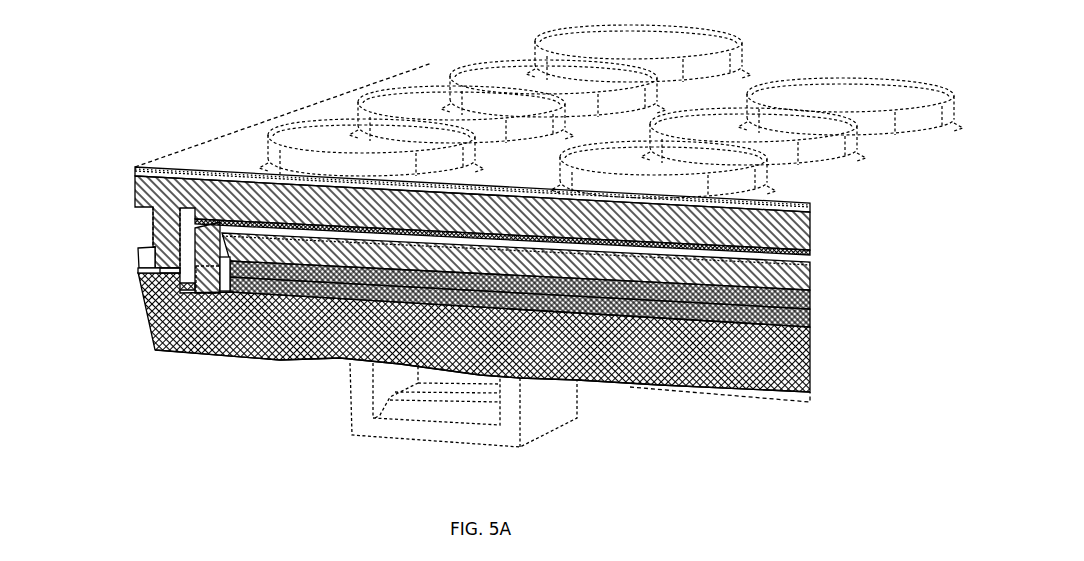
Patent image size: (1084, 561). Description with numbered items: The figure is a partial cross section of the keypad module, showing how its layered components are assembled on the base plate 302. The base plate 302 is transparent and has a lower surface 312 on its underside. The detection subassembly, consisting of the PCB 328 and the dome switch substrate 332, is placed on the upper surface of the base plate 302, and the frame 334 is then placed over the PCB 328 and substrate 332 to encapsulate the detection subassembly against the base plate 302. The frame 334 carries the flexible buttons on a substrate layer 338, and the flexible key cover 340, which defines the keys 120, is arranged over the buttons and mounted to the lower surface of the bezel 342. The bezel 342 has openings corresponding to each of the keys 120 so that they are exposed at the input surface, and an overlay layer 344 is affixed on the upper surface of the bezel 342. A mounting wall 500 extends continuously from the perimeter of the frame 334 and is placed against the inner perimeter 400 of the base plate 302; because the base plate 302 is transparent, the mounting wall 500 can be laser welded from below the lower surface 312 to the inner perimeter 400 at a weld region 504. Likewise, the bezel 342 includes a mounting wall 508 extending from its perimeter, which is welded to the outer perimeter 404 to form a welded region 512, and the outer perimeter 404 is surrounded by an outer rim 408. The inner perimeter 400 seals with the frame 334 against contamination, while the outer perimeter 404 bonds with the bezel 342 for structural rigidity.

The keys 120 is at (785, 147).
The base plate 302 is at (654, 367).
The lower surface 312 is at (308, 362).
The PCB 328 is at (808, 302).
The substrate 332 is at (803, 312).
The frame 334 is at (803, 287).
The substrate layer 338 is at (812, 271).
The key cover 340 is at (812, 252).
The bezel 342 is at (790, 238).
The overlay layer 344 is at (802, 213).
The inner perimeter 400 is at (223, 290).
The outer perimeter 404 is at (153, 268).
The outer rim 408 is at (140, 255).
The mounting wall 500 is at (210, 245).
The weld region 504 is at (208, 293).
The mounting wall 508 is at (160, 230).
The welded region 512 is at (170, 271).